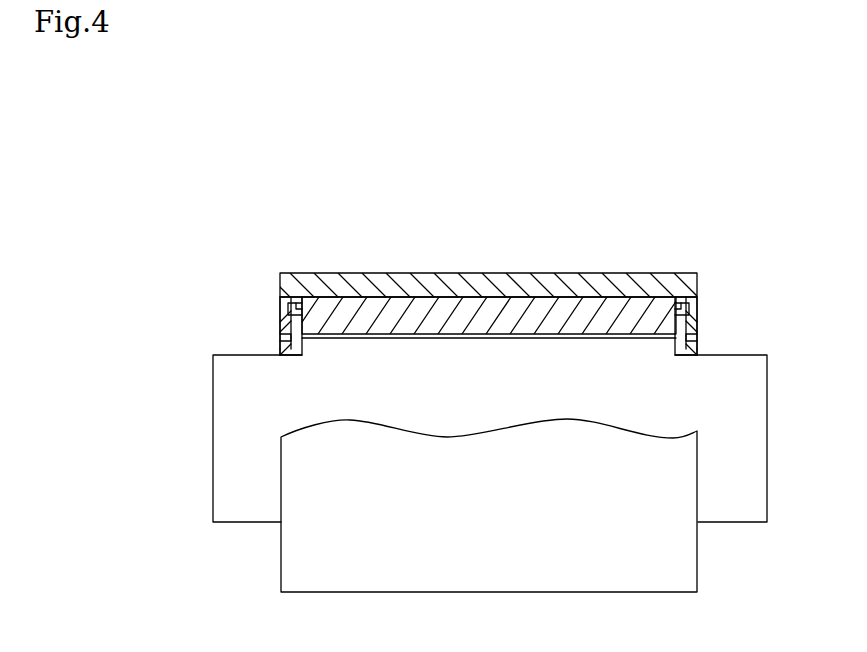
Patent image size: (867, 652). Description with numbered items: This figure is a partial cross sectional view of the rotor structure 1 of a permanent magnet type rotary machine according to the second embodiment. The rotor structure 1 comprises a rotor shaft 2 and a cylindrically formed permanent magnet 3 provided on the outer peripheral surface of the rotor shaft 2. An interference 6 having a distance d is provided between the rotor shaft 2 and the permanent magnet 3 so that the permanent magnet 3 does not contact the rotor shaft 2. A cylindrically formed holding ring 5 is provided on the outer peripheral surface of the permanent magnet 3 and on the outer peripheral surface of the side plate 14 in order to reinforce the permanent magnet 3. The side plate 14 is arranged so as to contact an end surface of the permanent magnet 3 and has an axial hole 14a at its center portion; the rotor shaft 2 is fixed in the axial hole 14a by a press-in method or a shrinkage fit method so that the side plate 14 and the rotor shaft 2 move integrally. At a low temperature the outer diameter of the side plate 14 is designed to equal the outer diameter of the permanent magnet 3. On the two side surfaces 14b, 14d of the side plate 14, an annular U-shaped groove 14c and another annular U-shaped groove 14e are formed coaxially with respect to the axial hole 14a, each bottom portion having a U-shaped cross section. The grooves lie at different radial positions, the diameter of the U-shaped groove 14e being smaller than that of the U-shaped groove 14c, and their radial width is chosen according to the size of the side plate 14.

The rotor structure 1 is at (572, 245).
The rotor shaft 2 is at (243, 513).
The permanent magnet 3 is at (618, 315).
The holding ring 5 is at (392, 278).
The interference 6 is at (530, 334).
The side plate 14 is at (288, 326).
The axial hole 14a is at (294, 357).
The side surface 14b is at (300, 298).
The U-shaped groove 14c is at (291, 301).
The side surface 14d is at (280, 304).
The U-shaped groove 14e is at (283, 338).